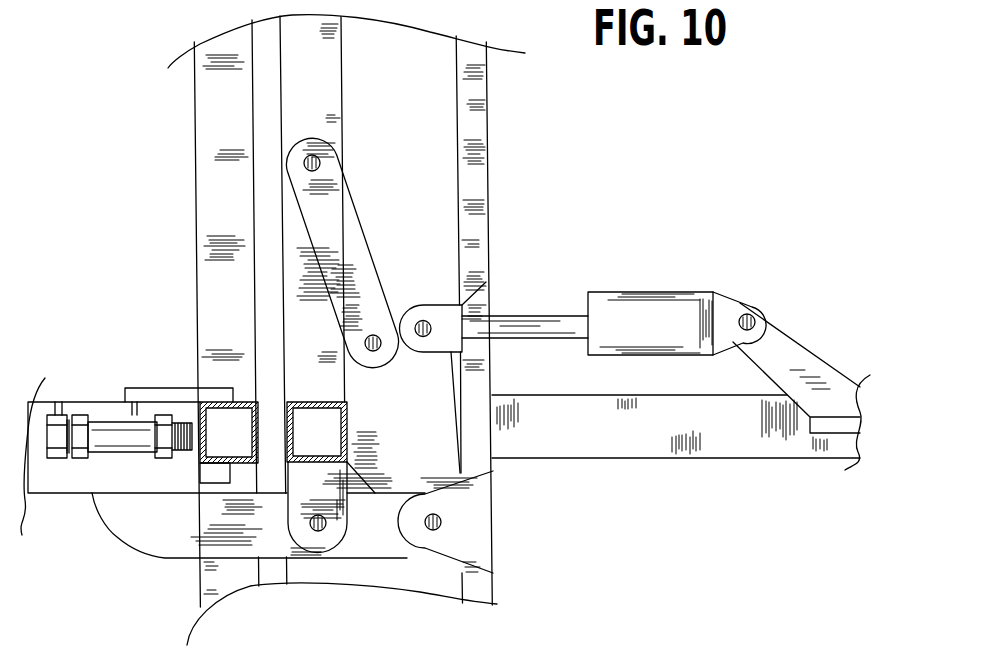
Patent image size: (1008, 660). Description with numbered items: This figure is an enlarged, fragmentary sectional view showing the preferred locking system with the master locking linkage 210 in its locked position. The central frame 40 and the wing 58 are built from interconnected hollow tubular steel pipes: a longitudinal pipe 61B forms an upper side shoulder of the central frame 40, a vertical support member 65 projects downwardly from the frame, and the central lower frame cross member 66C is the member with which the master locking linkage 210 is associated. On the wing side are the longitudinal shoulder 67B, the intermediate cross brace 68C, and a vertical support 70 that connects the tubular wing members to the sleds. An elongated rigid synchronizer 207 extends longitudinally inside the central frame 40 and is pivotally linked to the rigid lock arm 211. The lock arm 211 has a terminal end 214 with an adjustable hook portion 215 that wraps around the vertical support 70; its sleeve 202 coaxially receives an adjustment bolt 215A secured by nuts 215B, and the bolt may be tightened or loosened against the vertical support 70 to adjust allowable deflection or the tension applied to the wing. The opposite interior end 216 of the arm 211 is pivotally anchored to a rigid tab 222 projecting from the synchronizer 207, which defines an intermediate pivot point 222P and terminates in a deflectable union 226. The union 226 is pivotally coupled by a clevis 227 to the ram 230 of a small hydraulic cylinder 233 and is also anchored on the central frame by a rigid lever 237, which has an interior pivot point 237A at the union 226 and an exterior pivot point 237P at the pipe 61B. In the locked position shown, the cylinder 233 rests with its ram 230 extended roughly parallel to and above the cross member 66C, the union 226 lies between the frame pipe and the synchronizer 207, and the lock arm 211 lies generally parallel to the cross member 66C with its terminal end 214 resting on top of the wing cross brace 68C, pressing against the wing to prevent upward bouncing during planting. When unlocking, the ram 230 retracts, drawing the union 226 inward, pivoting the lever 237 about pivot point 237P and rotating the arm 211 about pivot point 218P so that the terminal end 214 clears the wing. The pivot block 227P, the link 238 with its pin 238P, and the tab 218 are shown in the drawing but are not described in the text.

The central frame 40 is at (626, 499).
The wing 58 is at (155, 288).
The longitudinal pipe 61B is at (337, 95).
The vertical support member 65 is at (350, 425).
The central lower frame cross member 66C is at (810, 447).
The longitudinal shoulder 67B is at (207, 163).
The intermediate cross brace 68C is at (23, 513).
The vertical support 70 is at (213, 413).
The sleeve 202 is at (118, 420).
The synchronizer 207 is at (478, 138).
The locking linkage 210 is at (552, 237).
The lock arm 211 is at (188, 552).
The terminal end 214 is at (92, 485).
The adjustable hook portion 215 is at (123, 512).
The adjustment bolt 215A is at (57, 404).
The nuts 215B is at (113, 453).
The interior end 216 is at (407, 550).
The pivot tab 218 is at (347, 520).
The pivot point 218P is at (322, 530).
The rigid tab 222 is at (492, 493).
The intermediate pivot point 222P is at (441, 522).
The deflectable union 226 is at (416, 394).
The clevis 227 is at (460, 295).
The lever pivot block 227P is at (488, 345).
The ram 230 is at (530, 315).
The hydraulic cylinder 233 is at (645, 289).
The rigid lever 237 is at (355, 237).
The interior pivot point 237A is at (320, 160).
The exterior pivot point 237P is at (376, 335).
The angled link 238 is at (782, 338).
The link pivot pin 238P is at (751, 307).